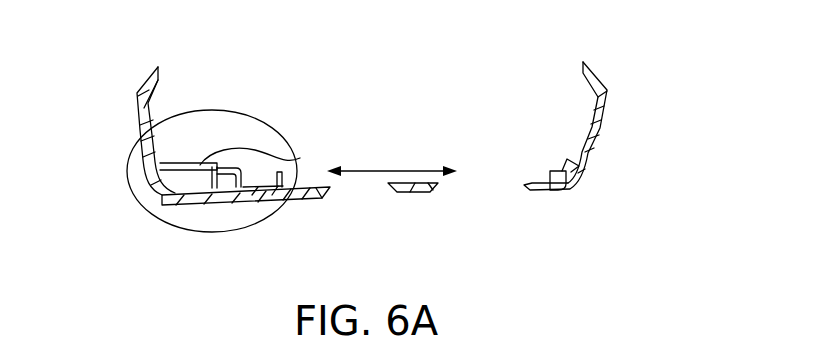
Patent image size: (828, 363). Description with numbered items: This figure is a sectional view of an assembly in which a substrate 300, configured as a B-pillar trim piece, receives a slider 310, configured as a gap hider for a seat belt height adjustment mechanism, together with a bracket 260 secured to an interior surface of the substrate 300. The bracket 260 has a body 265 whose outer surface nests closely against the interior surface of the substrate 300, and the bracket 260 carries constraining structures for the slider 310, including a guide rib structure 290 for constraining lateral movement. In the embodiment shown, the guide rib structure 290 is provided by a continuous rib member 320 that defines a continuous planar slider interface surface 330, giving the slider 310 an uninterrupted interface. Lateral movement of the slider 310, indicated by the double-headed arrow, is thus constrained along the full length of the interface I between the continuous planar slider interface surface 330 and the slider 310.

The substrate 300 is at (152, 75).
The slider 310 is at (318, 196).
The body 265 is at (157, 129).
The bracket 260 is at (195, 147).
The continuous planar slider interface surface 330 is at (213, 190).
The continuous rib member 320 is at (216, 167).
The interface I is at (280, 158).
The guide rib structure 290 is at (173, 191).